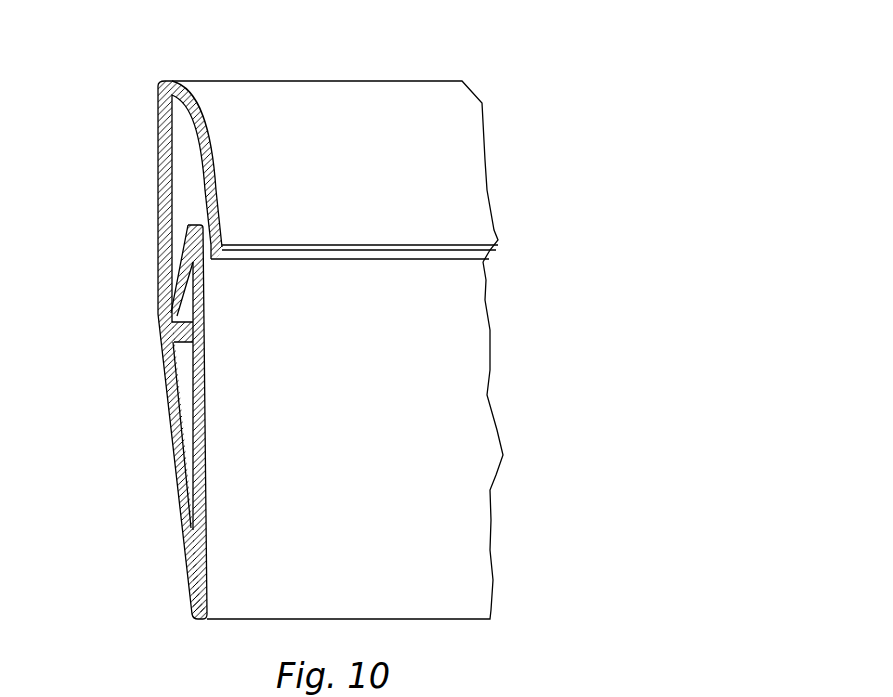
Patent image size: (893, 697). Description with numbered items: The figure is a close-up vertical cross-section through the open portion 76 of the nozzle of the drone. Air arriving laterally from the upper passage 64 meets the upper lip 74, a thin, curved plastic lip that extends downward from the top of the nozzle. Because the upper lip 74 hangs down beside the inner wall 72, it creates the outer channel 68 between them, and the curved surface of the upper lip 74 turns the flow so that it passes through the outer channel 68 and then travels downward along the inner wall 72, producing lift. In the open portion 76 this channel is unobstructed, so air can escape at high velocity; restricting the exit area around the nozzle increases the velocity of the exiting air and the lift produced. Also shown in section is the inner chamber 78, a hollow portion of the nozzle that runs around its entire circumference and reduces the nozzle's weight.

The upper passage 64 is at (187, 160).
The outer channel 68 is at (198, 250).
The inner wall 72 is at (462, 368).
The upper lip 74 is at (413, 140).
The open portion 76 is at (286, 340).
The inner chamber 78 is at (183, 378).